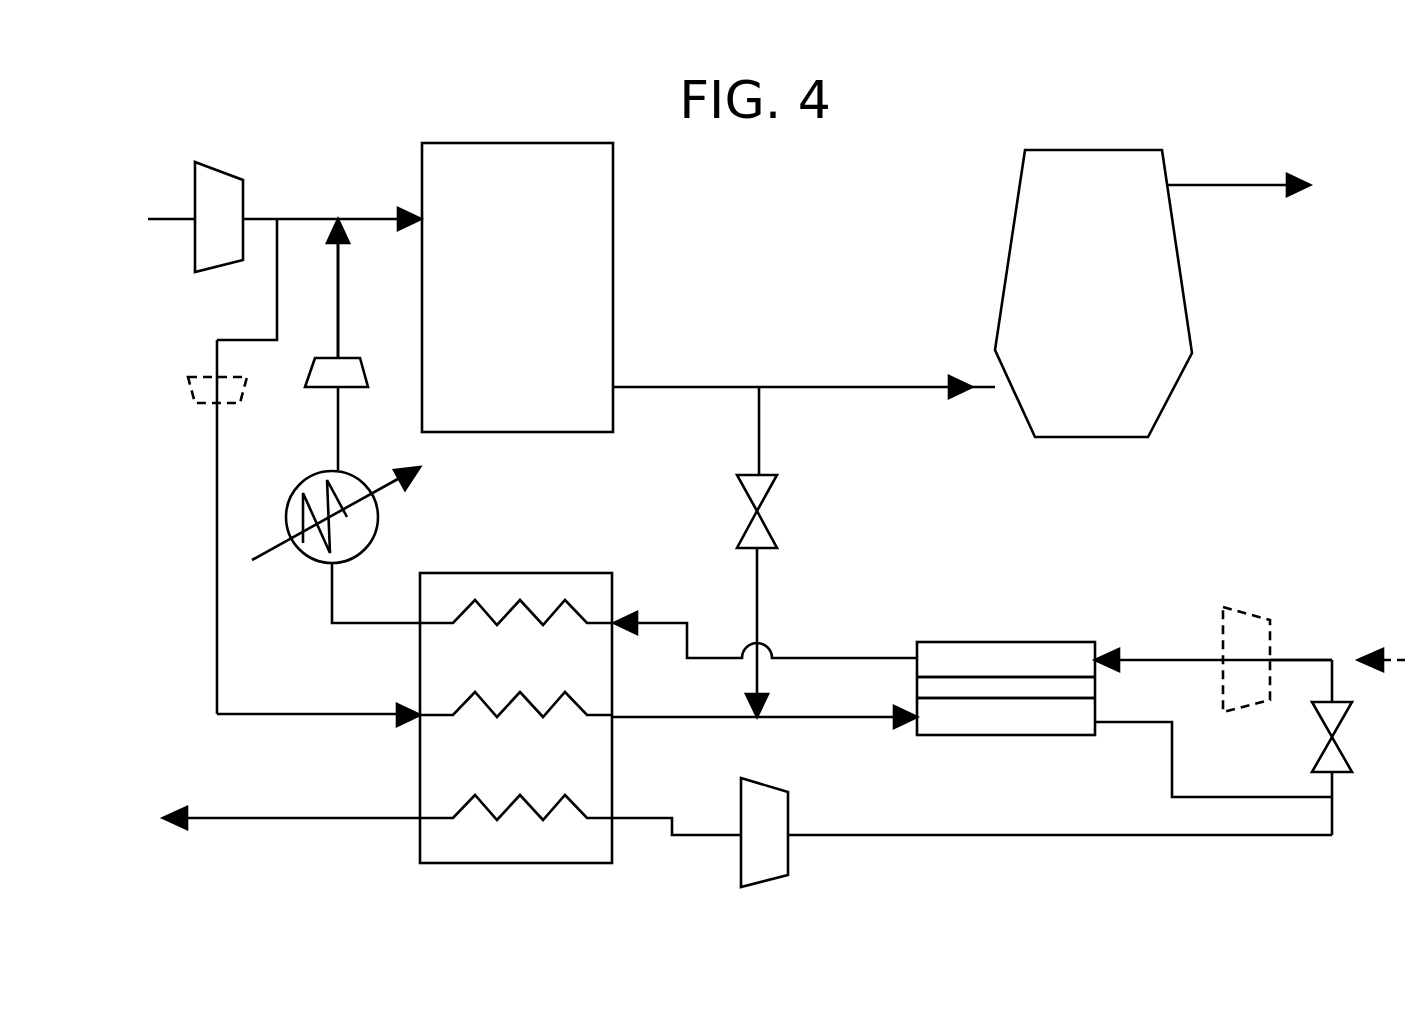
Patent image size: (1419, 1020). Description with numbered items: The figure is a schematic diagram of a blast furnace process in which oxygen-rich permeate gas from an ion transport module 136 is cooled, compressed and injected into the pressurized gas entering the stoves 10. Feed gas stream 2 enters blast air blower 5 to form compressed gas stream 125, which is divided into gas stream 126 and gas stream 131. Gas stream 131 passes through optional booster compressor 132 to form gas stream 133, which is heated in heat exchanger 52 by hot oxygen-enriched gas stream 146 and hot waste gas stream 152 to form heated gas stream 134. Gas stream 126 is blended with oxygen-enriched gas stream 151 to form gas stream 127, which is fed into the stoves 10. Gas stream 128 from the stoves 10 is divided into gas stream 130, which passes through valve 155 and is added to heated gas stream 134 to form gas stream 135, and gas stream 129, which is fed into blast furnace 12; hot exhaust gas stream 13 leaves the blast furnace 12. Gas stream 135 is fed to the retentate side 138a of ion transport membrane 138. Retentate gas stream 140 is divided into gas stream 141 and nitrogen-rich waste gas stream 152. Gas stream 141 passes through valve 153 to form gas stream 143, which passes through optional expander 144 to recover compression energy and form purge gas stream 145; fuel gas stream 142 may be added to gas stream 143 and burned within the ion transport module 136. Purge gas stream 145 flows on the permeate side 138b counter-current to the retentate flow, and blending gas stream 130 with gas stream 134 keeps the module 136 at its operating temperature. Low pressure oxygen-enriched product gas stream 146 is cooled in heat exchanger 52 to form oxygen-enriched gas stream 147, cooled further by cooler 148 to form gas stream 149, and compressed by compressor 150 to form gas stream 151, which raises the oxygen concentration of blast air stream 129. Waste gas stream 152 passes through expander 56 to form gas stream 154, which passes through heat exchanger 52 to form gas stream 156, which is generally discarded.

The feed gas stream 2 is at (172, 232).
The blast air blower 5 is at (233, 172).
The stoves 10 is at (615, 197).
The blast furnace 12 is at (1015, 210).
The hot exhaust gas stream 13 is at (1250, 185).
The heat exchanger 52 is at (487, 865).
The expander 56 is at (775, 878).
The compressed gas stream 125 is at (263, 219).
The gas stream 126 is at (320, 219).
The gas stream 127 is at (377, 215).
The gas stream 128 is at (660, 387).
The gas stream 129 is at (857, 387).
The gas stream 130 is at (760, 427).
The gas stream 131 is at (240, 340).
The optional booster compressor 132 is at (193, 400).
The gas stream 133 is at (216, 553).
The heated gas stream 134 is at (672, 718).
The gas stream 135 is at (835, 718).
The ion transport module 136 is at (1058, 737).
The ion transport membrane 138 is at (1097, 690).
The retentate side 138a is at (938, 700).
The permeate side 138b is at (997, 672).
The retentate gas stream 140 is at (1210, 800).
The gas stream 141 is at (1335, 785).
The fuel gas stream 142 is at (1407, 660).
The gas stream 143 is at (1298, 660).
The optional expander 144 is at (1252, 612).
The purge gas stream 145 is at (1175, 660).
The oxygen-enriched product gas stream 146 is at (655, 622).
The oxygen-enriched gas stream 147 is at (372, 620).
The cooler 148 is at (312, 558).
The gas stream 149 is at (340, 427).
The compressor 150 is at (365, 373).
The oxygen-enriched gas stream 151 is at (335, 333).
The nitrogen-rich waste gas stream 152 is at (1335, 818).
The valve 153 is at (1318, 720).
The gas stream 154 is at (700, 838).
The valve 155 is at (768, 497).
The gas stream 156 is at (305, 820).